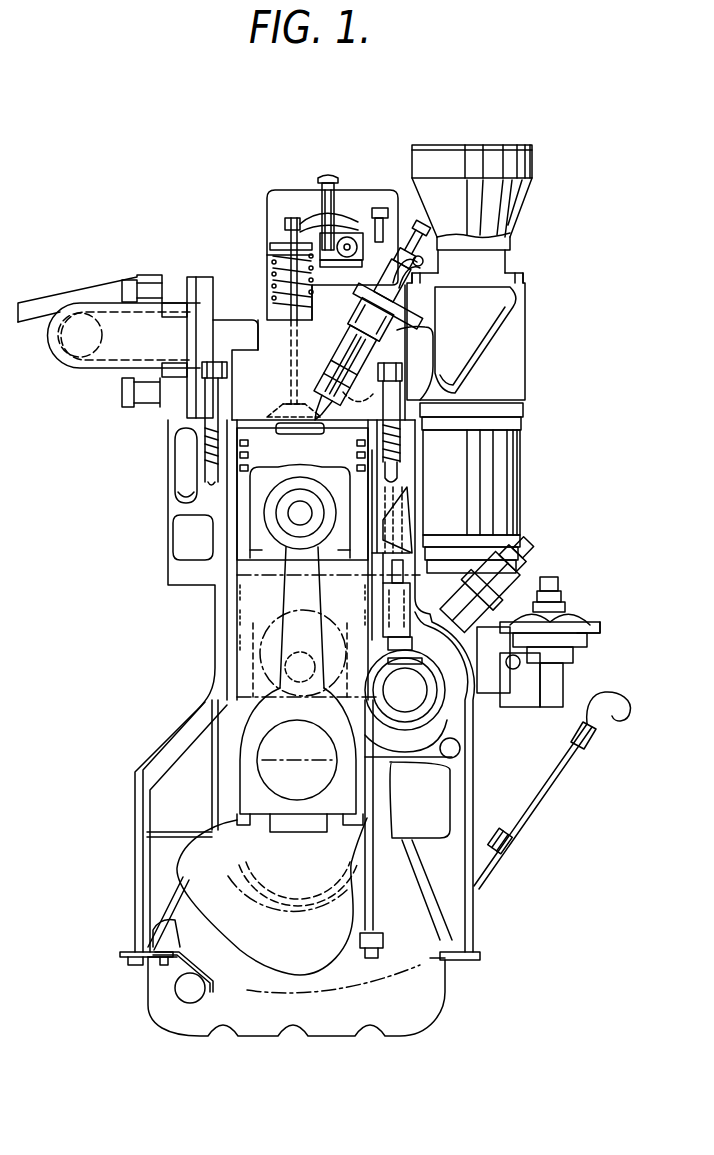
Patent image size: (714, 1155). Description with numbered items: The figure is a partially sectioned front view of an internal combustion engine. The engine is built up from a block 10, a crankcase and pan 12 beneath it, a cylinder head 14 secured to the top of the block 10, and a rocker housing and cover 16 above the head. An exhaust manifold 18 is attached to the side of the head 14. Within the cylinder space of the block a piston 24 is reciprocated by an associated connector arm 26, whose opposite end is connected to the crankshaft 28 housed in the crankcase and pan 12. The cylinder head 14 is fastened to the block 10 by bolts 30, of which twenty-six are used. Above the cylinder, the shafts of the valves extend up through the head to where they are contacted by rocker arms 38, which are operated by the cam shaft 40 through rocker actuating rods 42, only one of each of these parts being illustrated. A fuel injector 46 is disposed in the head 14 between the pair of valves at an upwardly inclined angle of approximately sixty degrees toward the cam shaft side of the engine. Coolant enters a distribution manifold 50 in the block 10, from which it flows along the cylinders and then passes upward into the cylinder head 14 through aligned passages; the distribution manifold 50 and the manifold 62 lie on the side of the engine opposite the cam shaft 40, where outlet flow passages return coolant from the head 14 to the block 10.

The block 10 is at (214, 651).
The crankcase and pan 12 is at (448, 990).
The cylinder head 14 is at (262, 396).
The rocker housing and cover 16 is at (230, 225).
The exhaust manifold 18 is at (81, 293).
The piston 24 is at (310, 463).
The connector arm 26 is at (311, 617).
The crankshaft 28 is at (307, 756).
The bolts 30 is at (212, 402).
The rocker arms 38 is at (287, 190).
The cam shaft 40 is at (415, 703).
The rocker actuating rods 42 is at (393, 645).
The fuel injectors 46 is at (362, 330).
The distribution manifold 50 is at (187, 467).
The manifold 62 is at (183, 540).